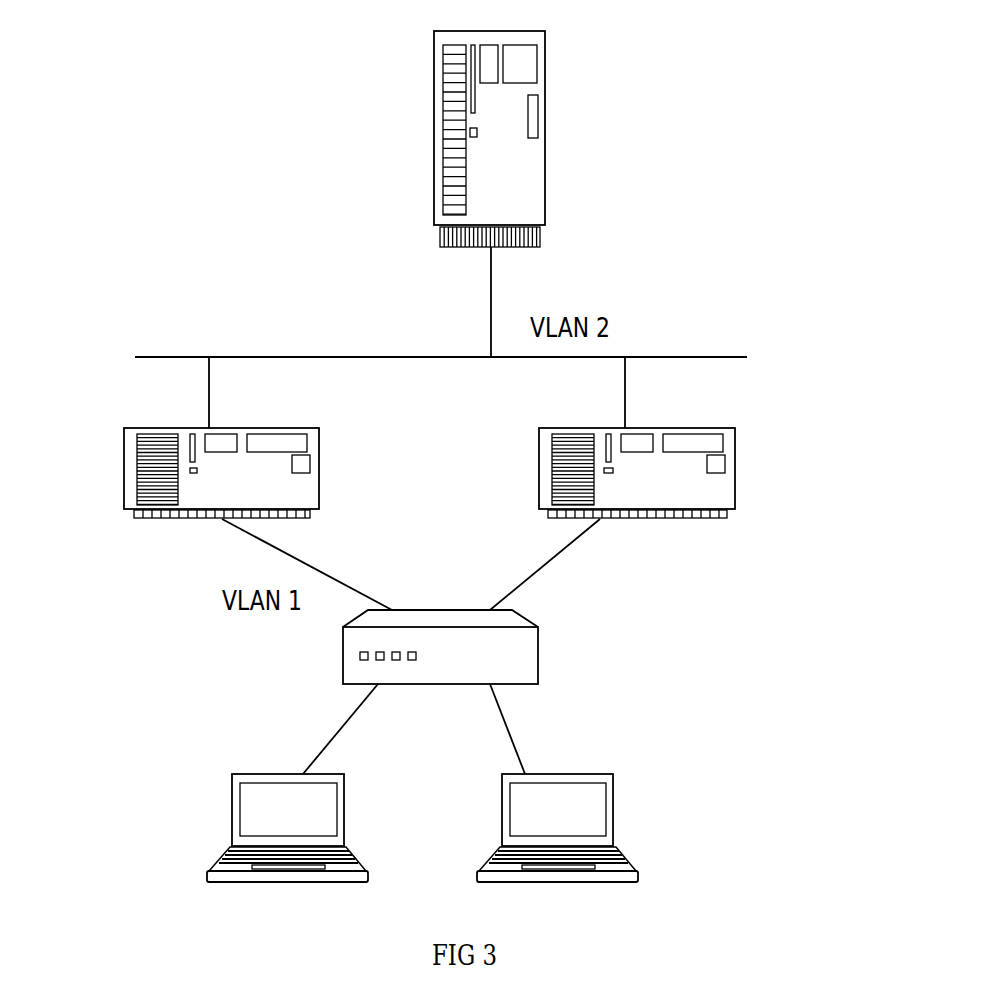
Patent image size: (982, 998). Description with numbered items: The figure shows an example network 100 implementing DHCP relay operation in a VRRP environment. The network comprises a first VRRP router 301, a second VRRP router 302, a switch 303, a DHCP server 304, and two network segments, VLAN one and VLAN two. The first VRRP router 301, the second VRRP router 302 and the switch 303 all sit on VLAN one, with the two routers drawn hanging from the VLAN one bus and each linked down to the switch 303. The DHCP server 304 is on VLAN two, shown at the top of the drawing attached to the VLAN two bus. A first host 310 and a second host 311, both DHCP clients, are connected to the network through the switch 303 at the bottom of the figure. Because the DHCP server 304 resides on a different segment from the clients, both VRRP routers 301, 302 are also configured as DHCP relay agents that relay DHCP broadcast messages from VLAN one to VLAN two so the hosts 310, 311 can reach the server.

The network system 100 is at (762, 705).
The first VRRP router 301 is at (123, 462).
The second VRRP router 302 is at (735, 465).
The switch 303 is at (538, 660).
The DHCP server 304 is at (545, 88).
The first host 310 is at (344, 810).
The second host 311 is at (613, 810).